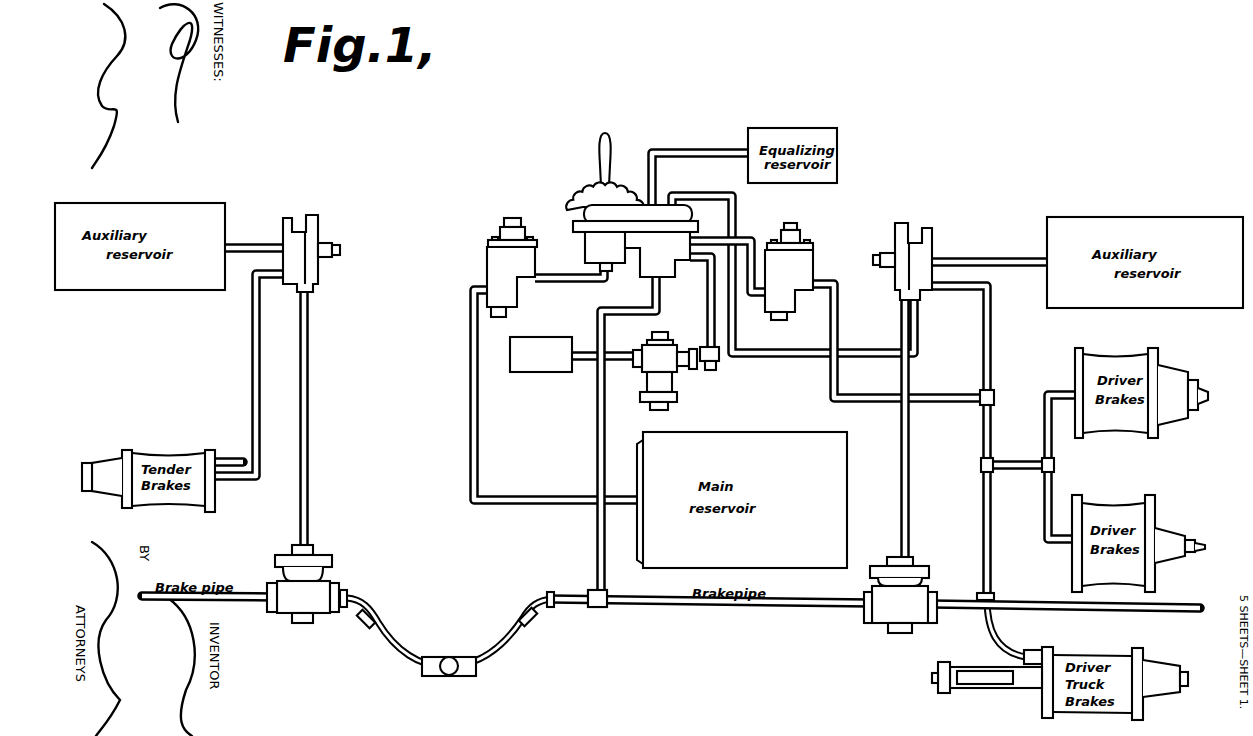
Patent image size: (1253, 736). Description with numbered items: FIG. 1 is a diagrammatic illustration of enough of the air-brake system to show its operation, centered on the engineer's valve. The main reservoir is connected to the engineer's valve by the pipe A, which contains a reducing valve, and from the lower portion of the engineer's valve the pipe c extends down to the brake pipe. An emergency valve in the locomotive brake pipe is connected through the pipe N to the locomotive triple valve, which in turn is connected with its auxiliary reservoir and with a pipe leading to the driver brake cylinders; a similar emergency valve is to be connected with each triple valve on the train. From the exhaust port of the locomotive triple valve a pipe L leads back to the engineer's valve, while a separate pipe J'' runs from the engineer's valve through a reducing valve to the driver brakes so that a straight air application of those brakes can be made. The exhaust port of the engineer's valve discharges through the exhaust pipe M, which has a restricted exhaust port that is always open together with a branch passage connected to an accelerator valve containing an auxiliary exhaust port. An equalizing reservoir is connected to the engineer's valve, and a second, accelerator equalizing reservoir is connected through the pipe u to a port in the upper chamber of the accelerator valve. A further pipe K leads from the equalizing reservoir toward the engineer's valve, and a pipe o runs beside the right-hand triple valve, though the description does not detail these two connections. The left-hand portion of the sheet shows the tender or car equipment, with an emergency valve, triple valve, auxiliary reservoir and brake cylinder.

The pipe A is at (606, 277).
The pipe c is at (660, 295).
The equalizing reservoir pipe K is at (656, 177).
The pipe L is at (696, 192).
The pipe J'' is at (838, 304).
The exhaust pipe M is at (712, 322).
The pipe N is at (903, 462).
The pipe o is at (992, 331).
The pipe u is at (612, 361).